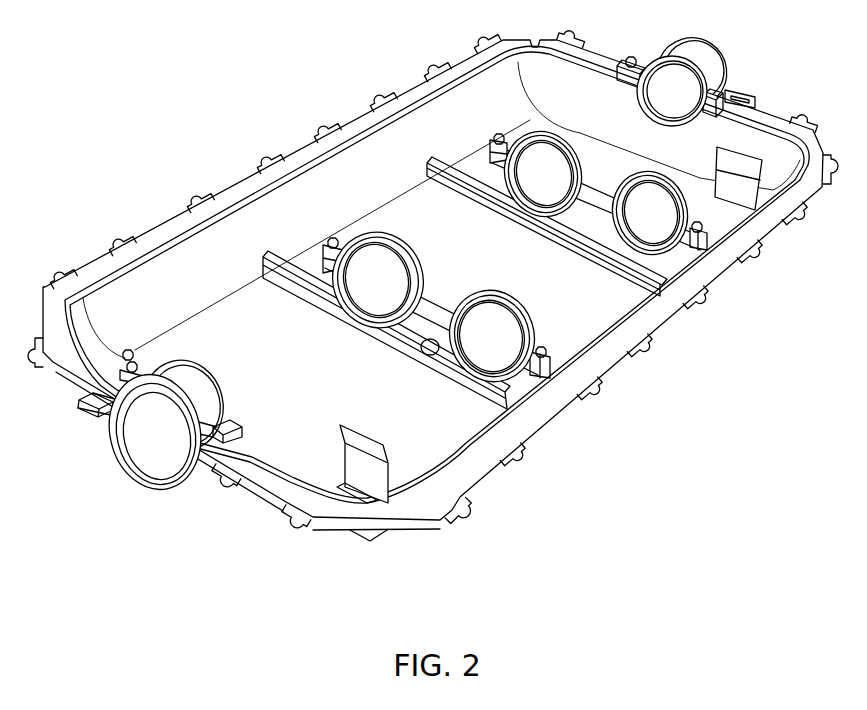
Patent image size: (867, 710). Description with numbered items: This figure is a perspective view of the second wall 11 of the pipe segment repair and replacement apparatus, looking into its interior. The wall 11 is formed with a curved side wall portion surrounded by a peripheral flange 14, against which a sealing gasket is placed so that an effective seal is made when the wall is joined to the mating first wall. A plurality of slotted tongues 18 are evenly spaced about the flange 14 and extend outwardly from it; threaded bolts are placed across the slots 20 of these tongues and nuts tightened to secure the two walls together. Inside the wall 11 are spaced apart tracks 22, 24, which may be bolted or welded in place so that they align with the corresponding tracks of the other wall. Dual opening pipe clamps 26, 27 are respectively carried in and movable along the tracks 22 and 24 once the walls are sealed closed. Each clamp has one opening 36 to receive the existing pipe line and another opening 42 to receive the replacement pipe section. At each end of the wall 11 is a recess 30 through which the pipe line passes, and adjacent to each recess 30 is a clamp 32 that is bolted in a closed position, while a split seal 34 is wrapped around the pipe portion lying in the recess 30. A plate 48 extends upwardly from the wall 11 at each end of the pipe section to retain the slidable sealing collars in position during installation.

The second wall 11 is at (160, 230).
The flange 14 is at (467, 470).
The slotted tongue 18 is at (433, 527).
The slot 20 is at (450, 517).
The track 22 is at (283, 295).
The track 24 is at (470, 192).
The dual opening pipe clamp 26 is at (435, 305).
The dual opening pipe clamp 27 is at (567, 220).
The recess 30 is at (663, 105).
The clamp 32 is at (203, 393).
The split seal 34 is at (110, 410).
The opening 36 is at (372, 310).
The opening 42 is at (475, 358).
The plate 48 is at (350, 465).